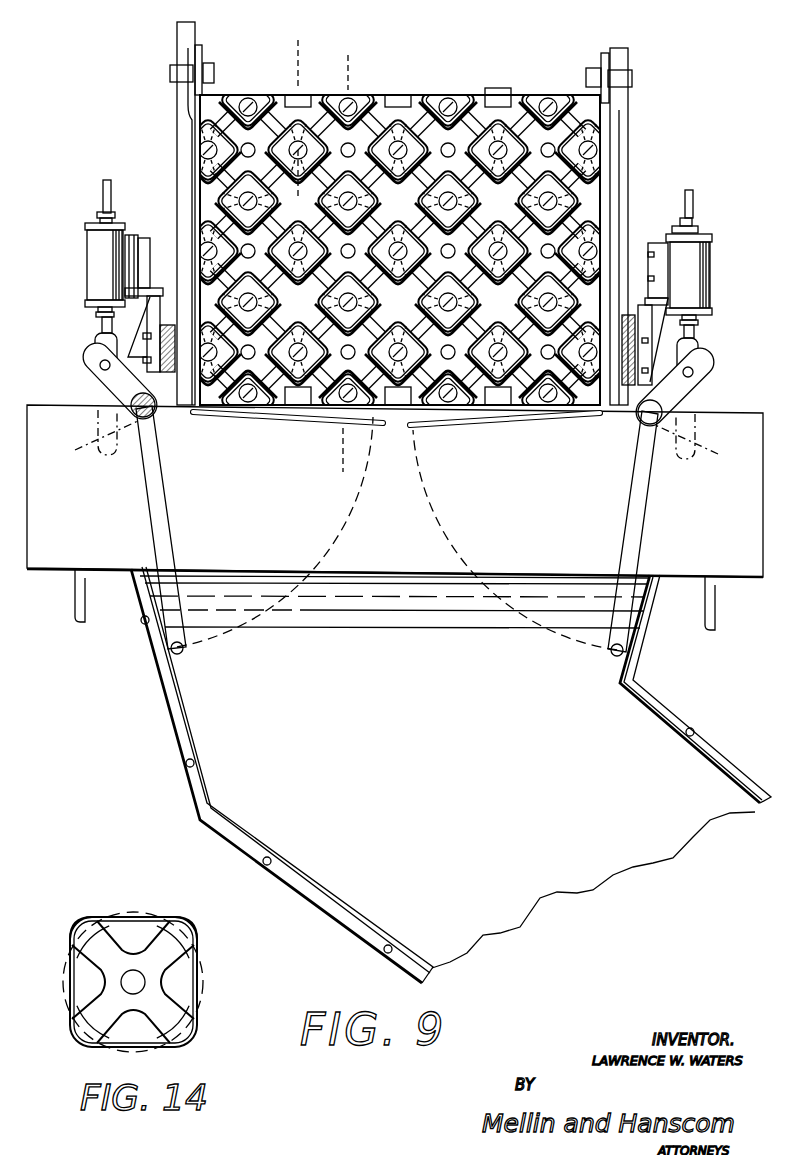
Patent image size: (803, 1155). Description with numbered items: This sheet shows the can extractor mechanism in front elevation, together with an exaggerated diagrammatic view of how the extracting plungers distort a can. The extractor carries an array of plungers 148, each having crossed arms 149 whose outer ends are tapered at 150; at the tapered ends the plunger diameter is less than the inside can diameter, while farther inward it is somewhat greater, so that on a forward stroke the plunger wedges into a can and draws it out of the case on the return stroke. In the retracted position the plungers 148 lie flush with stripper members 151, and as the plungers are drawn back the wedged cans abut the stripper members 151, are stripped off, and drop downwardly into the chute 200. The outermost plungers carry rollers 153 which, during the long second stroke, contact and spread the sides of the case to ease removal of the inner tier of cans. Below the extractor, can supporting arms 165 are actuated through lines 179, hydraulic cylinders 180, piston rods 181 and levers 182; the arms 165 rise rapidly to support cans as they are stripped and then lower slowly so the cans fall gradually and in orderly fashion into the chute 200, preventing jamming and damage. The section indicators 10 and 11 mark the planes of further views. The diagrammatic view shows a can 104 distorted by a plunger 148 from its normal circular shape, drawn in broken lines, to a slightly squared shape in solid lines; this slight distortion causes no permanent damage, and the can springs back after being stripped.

In FIG. 9, the section line 10- 10 is at (380, 55).
In FIG. 9, the section line 11- 11 is at (322, 40).
In FIG. 14, the can 104 is at (138, 908).
In FIG. 9, the plunger 148 is at (258, 132).
In FIG. 14, the plunger 148 is at (183, 998).
In FIG. 9, the crossed arms 149 is at (382, 98).
In FIG. 14, the crossed arms 149 is at (82, 923).
In FIG. 14, the tapered ends 150 is at (80, 1024).
In FIG. 9, the stripper member 151 is at (498, 251).
In FIG. 9, the roller 153 is at (496, 78).
In FIG. 9, the can supporting arm 165 is at (164, 486).
In FIG. 9, the line 179 is at (103, 196).
In FIG. 9, the hydraulic cylinder 180 is at (87, 278).
In FIG. 9, the piston rod 181 is at (100, 328).
In FIG. 9, the lever 182 is at (108, 387).
In FIG. 9, the chute 200 is at (194, 758).